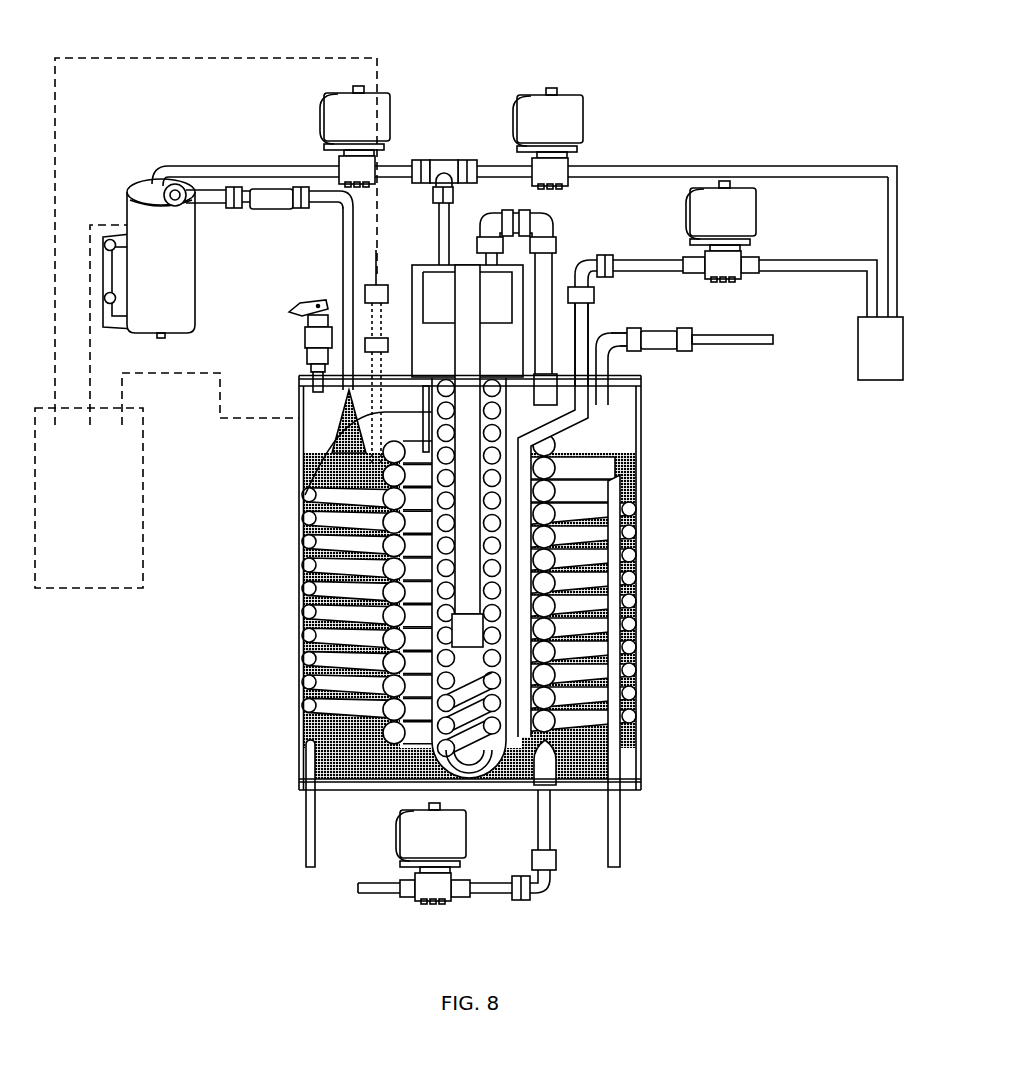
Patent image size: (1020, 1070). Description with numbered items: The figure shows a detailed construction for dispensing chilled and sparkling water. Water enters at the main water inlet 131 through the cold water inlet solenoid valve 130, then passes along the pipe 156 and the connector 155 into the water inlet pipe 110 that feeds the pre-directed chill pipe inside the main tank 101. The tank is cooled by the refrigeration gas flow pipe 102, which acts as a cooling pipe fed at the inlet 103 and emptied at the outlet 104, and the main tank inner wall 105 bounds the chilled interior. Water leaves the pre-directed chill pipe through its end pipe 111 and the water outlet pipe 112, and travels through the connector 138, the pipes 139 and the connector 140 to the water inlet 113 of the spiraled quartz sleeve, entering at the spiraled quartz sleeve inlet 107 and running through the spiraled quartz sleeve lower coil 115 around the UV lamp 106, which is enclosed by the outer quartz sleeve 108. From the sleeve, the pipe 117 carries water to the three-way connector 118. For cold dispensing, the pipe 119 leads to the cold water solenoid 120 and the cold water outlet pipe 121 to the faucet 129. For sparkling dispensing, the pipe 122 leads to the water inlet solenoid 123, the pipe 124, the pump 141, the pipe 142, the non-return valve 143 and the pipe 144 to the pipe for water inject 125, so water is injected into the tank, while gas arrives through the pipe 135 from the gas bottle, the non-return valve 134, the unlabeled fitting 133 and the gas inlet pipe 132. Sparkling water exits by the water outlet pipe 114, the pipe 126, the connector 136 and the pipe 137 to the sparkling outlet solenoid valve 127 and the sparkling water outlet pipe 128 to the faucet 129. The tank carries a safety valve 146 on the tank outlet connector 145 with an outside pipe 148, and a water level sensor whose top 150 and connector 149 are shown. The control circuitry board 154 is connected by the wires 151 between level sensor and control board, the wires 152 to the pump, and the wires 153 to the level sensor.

The main tank 101 is at (298, 399).
The refrigeration gas flow pipe 102 is at (300, 661).
The inlet of refrigeration gas flow pipe 103 is at (305, 841).
The outlet of refrigeration gas flow pipe 104 is at (621, 851).
The main tank inner wall 105 is at (300, 438).
The UV lamp 106 is at (455, 275).
The spiraled quartz sleeve inlet 107 is at (514, 360).
The outer quartz sleeve 108 is at (306, 471).
The water inlet pipe to pre-direct chill pipe 110 is at (552, 812).
The end pipe of pre-direct chill pipe 111 is at (590, 414).
The water outlet pipe for pre-direct chill pipe 112 is at (553, 282).
The water inlet to spiraled quartz sleeve 113 is at (462, 280).
The water outlet pipe of sparkling water toward a UV 114 is at (523, 766).
The spiraled quartz sleeve lower coil 115 is at (452, 732).
The pipe between spiraled quartz sleeve to 3 way connector 117 is at (439, 215).
The 3 way connector 118 is at (447, 172).
The pipe between 3 way connector to cold solenoid valve 119 is at (476, 160).
The cold water solenoid 120 is at (584, 104).
The cold water outlet pipe from solenoid valve 121 is at (850, 166).
The pipe between 3 way connector to sparkling inlet solenoid valve 122 is at (415, 160).
The water inlet solenoid to sparkling tank 123 is at (322, 112).
The pipe between sparkling inlet solenoid to main tank 124 is at (218, 165).
The pipe for water inject 125 is at (438, 346).
The pipe to the sparkling outlet solenoid valve 126 is at (594, 303).
The pipe to sparkling outlet solenoid valve 127 is at (757, 197).
The sparkling water outlet pipe from solenoid valve 128 is at (848, 258).
The faucet 129 is at (882, 381).
The cold water inlet solenoid valve 130 is at (437, 905).
The main water inlet 131 is at (372, 894).
The gas inlet pipe to the main tank 132 is at (606, 394).
The elbow 133 is at (626, 354).
The non-return valve 134 is at (685, 327).
The pipe to the gas bottle 135 is at (763, 345).
The connector 136 is at (605, 255).
The pipe to sparkling outlet solenoid valve 137 is at (658, 258).
The connector 138 is at (532, 222).
The pipes 139 is at (512, 214).
The connector 140 is at (447, 225).
The pump 141 is at (160, 179).
The pipe 142 is at (212, 205).
The non-return valve 143 is at (268, 212).
The pipe 144 is at (318, 190).
The tank outlet connector for safety valve 145 is at (300, 381).
The safety valve 146 is at (305, 334).
The outside pipe 148 is at (308, 355).
The connector 149 is at (364, 290).
The water level sensor top 150 is at (376, 266).
The wires between level sensor and PCB 151 is at (352, 57).
The wires to the pump 152 is at (96, 224).
The wires to level sensor 153 is at (182, 374).
The PCB 154 is at (144, 573).
The connector 155 is at (548, 888).
The pipe 156 is at (496, 894).